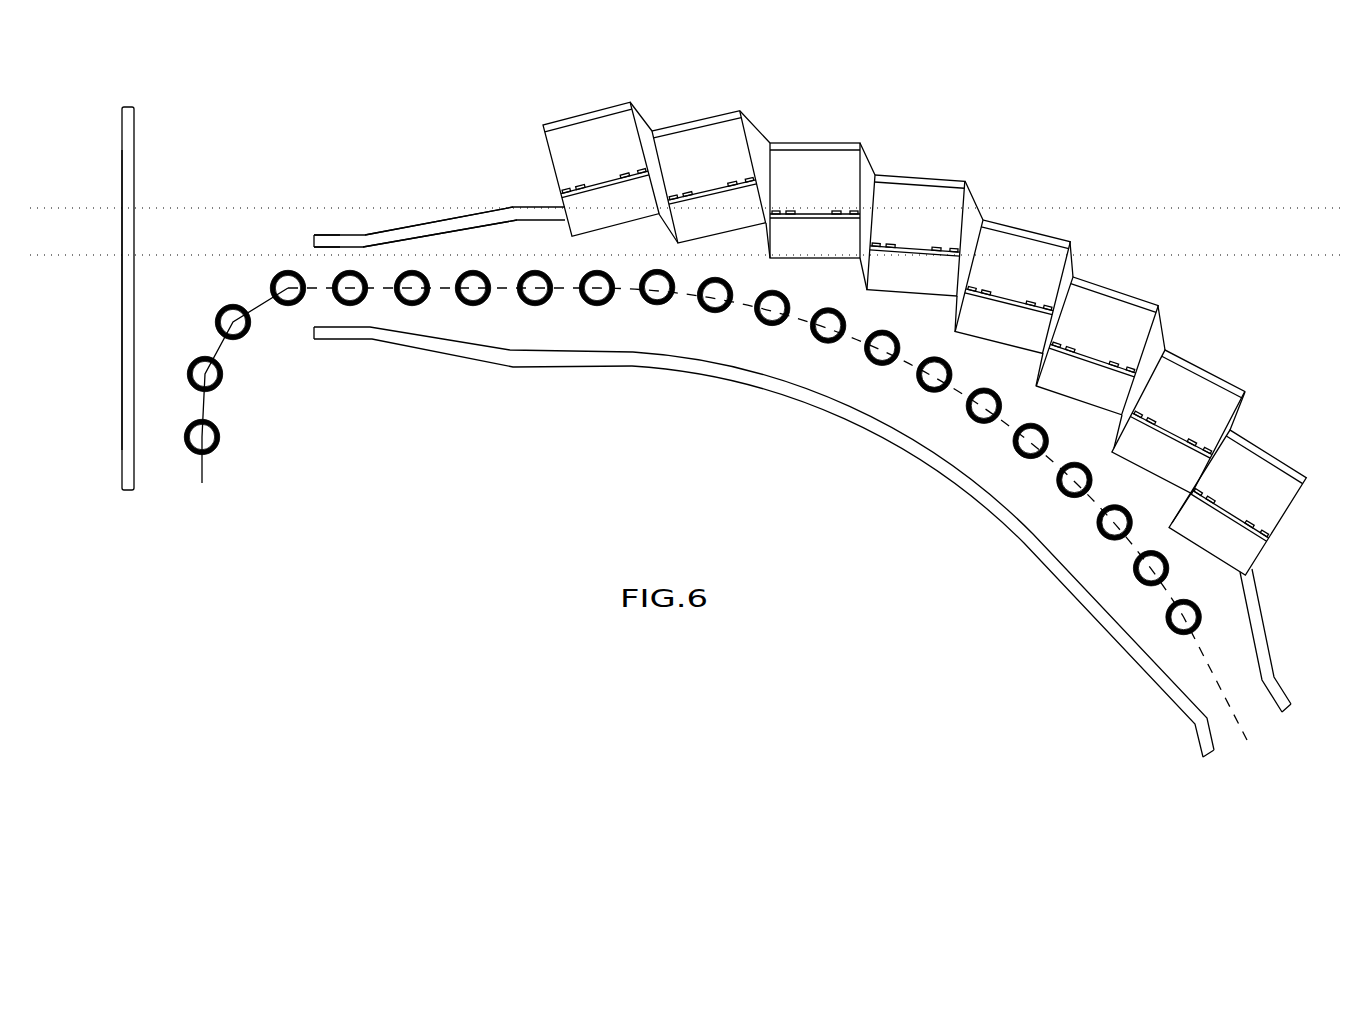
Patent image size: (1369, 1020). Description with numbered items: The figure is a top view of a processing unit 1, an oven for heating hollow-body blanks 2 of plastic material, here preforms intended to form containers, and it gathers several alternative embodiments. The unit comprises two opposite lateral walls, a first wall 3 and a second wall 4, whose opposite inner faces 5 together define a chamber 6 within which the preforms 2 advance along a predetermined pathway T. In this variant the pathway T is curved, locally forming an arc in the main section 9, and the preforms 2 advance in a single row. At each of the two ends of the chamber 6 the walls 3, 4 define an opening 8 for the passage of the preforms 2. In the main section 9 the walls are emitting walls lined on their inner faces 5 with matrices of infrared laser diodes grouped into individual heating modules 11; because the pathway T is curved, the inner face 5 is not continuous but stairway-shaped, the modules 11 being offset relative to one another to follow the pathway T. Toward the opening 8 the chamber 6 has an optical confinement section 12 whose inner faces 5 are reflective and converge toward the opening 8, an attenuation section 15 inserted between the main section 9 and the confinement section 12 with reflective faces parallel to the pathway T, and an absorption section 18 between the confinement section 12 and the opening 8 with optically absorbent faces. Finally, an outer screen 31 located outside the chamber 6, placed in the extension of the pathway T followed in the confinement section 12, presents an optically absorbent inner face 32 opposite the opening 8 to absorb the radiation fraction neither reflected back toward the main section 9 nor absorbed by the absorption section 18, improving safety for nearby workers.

The processing unit 1 is at (1043, 183).
The hollow-body blanks 2 is at (227, 307).
The first wall 3 is at (1078, 393).
The second wall 4 is at (873, 425).
The inner faces 5 is at (338, 247).
The chamber 6 is at (573, 367).
The opening 8 is at (315, 313).
The main section 9 is at (817, 300).
The individual heating modules 11 is at (598, 132).
The optical confinement section 12 is at (435, 218).
The attenuation section 15 is at (533, 205).
The absorption section 18 is at (338, 233).
The screen 31 is at (128, 398).
The optically absorbent inner face 32 is at (132, 235).
The pathway T is at (500, 290).